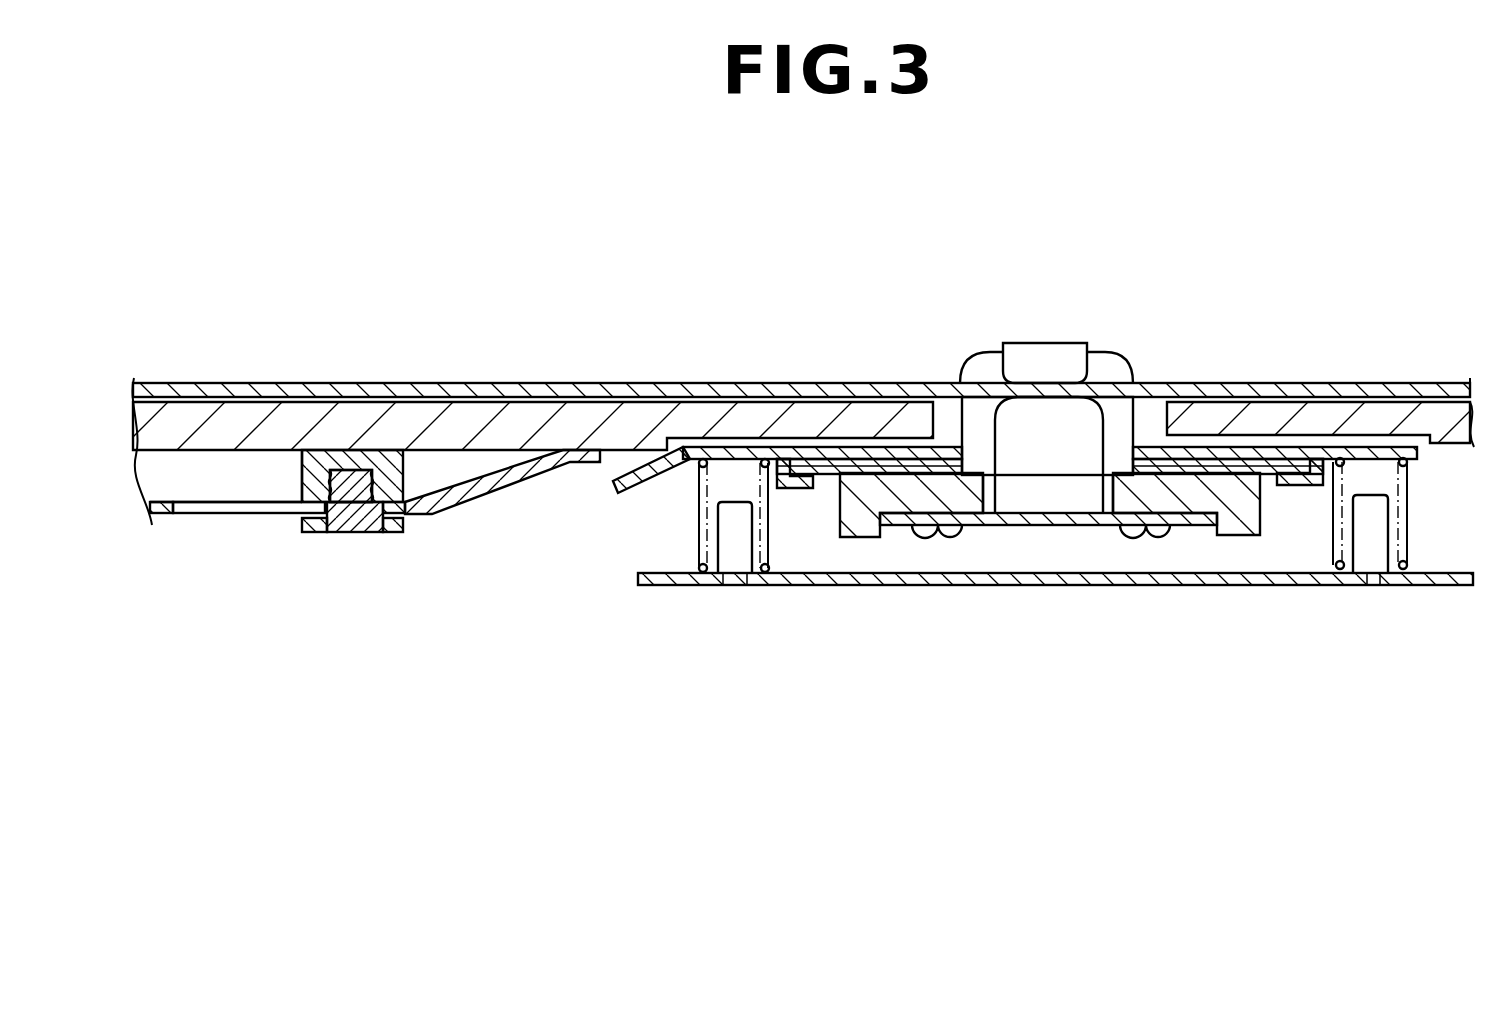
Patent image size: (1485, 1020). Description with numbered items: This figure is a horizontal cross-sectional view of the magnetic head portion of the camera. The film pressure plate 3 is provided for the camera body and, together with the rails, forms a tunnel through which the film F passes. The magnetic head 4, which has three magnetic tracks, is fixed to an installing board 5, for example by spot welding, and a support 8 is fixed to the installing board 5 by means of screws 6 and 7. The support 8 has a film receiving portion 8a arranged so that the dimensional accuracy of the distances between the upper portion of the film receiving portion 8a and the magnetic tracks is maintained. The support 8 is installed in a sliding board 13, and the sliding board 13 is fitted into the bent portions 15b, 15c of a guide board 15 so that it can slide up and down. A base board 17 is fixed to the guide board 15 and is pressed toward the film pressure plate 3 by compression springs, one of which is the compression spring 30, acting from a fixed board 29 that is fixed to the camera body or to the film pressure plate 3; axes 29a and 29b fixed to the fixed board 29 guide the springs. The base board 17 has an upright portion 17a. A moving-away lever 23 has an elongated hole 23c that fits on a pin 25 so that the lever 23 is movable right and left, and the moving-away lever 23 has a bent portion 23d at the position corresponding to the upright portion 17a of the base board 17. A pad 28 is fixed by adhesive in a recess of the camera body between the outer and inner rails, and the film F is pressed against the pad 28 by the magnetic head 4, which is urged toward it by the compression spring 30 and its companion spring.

The film F is at (1337, 388).
The film pressure plate 3 is at (1402, 418).
The magnetic head 4 is at (1072, 490).
The installing board 5 is at (1000, 520).
The screw 6 is at (927, 540).
The screw 7 is at (1141, 528).
The support 8 is at (1228, 536).
The film receiving portion 8a is at (1115, 372).
The sliding board 13 is at (827, 476).
The guide board 15 is at (1265, 473).
The bent portion 15b is at (800, 489).
The bent portion 15c is at (1305, 487).
The base board 17 is at (1227, 448).
The upright portion 17a is at (637, 490).
The moving-away lever 23 is at (155, 513).
The elongated hole 23c is at (238, 513).
The bent portion 23d is at (495, 480).
The pin 25 is at (360, 520).
The pad 28 is at (1062, 352).
The fixed board 29 is at (1037, 584).
The axis 29a is at (732, 557).
The axis 29b is at (1378, 553).
The compression spring 30 is at (697, 533).